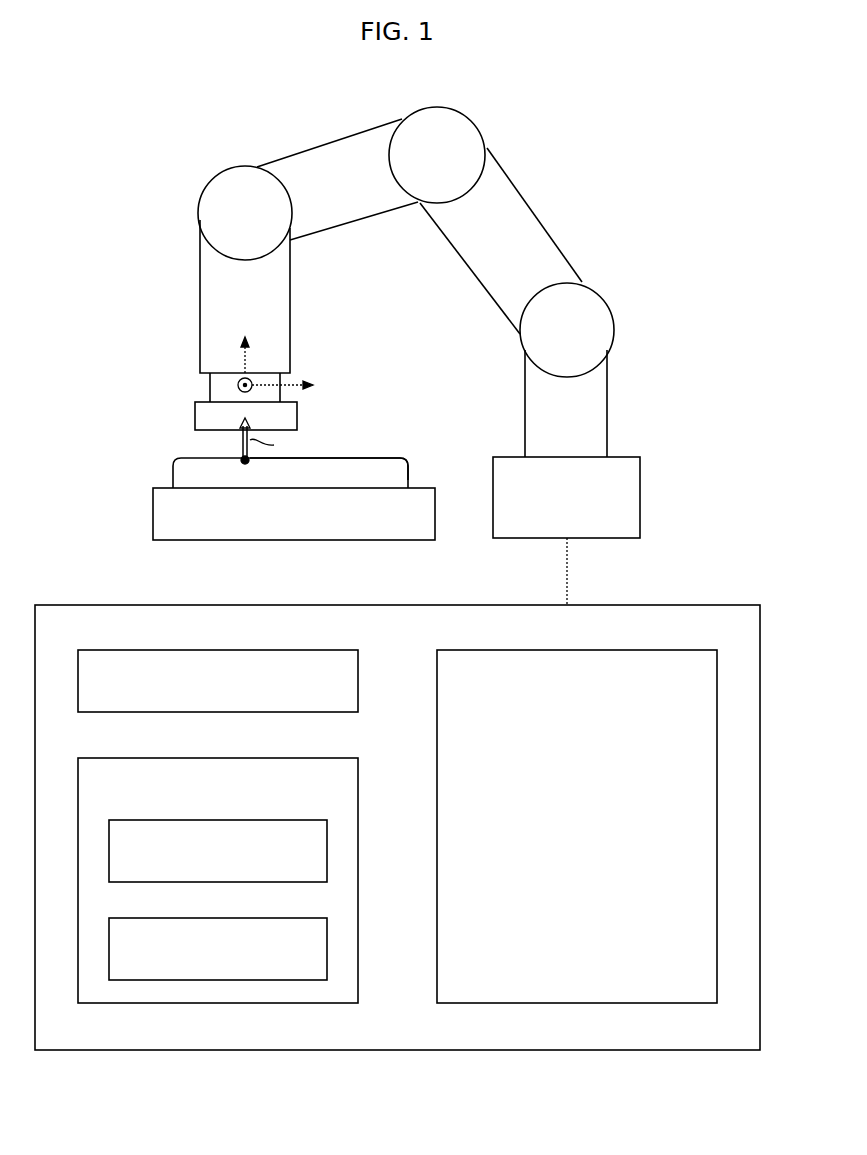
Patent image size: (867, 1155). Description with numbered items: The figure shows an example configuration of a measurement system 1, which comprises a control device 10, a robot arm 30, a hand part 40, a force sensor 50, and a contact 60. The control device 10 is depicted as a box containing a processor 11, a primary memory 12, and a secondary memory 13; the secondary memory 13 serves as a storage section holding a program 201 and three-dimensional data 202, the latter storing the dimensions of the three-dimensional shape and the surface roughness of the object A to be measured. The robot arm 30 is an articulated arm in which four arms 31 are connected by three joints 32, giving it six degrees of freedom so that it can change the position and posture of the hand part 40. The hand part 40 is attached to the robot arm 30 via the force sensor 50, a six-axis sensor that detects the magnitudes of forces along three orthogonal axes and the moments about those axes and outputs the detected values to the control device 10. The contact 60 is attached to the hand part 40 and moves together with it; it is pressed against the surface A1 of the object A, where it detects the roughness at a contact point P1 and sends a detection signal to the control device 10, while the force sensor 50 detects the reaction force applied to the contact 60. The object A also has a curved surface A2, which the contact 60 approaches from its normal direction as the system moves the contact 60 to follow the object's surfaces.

The measurement system 1 is at (612, 112).
The control device 10 is at (400, 605).
The processor 11 is at (632, 650).
The primary memory 12 is at (273, 649).
The secondary memory 13 is at (273, 757).
The program 201 is at (275, 818).
The three-dimensional data 202 is at (273, 918).
The robot arm 30 is at (498, 168).
The arm 31 is at (332, 142).
The joint 32 is at (228, 167).
The hand part 40 is at (195, 418).
The force sensor 50 is at (210, 388).
The contact 60 is at (240, 447).
The object to be measured A is at (173, 478).
The surface A1 is at (362, 458).
The surface A2 is at (407, 458).
The contact point P1 is at (245, 462).